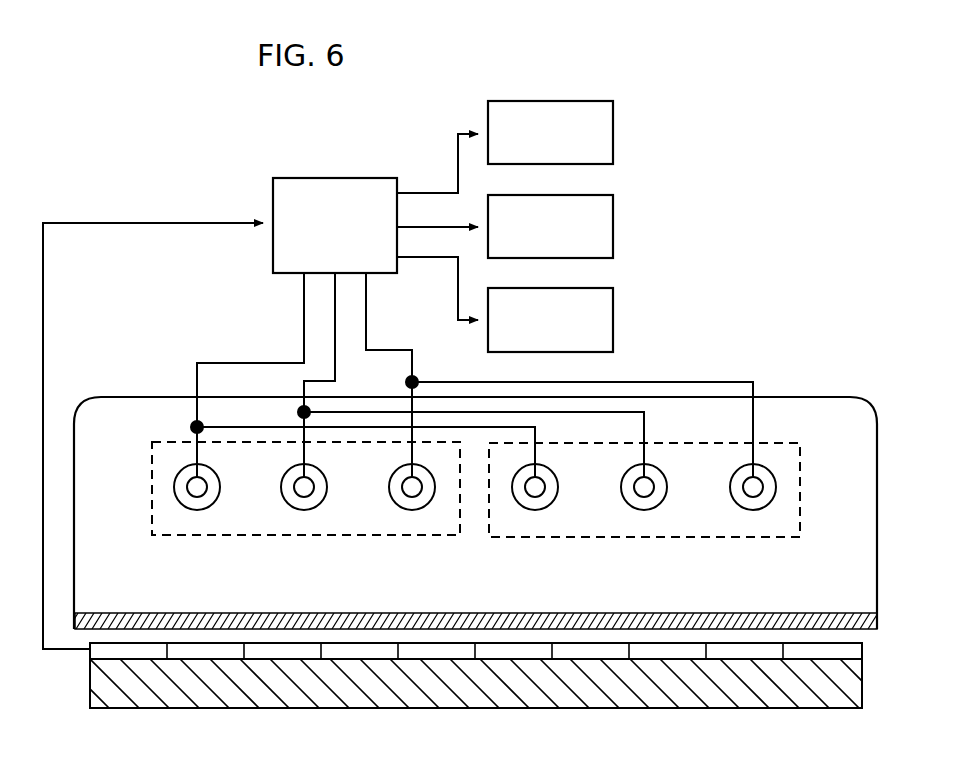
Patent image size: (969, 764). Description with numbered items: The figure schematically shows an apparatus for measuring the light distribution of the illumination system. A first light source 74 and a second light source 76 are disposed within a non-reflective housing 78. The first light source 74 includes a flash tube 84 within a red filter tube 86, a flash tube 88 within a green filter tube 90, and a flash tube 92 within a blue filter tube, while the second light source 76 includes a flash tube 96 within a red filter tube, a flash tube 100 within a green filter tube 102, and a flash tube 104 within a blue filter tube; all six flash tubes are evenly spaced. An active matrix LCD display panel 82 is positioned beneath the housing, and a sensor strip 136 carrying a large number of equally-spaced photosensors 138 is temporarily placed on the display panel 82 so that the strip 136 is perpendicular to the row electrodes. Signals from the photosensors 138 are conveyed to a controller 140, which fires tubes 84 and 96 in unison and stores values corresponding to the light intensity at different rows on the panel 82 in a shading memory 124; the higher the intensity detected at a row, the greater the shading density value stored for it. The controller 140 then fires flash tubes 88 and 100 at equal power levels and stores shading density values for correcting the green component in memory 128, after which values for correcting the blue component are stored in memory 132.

The controller 140 is at (353, 178).
The shading memory 124 is at (614, 128).
The memory 128 is at (614, 222).
The memory 132 is at (614, 318).
The non-reflective housing 78 is at (878, 467).
The first light source 74 is at (150, 502).
The second light source 76 is at (800, 497).
The red filter tube 86 is at (185, 470).
The flash tube 84 is at (203, 493).
The flash tube 88 is at (293, 478).
The green filter tube 90 is at (312, 494).
The flash tube 92 is at (401, 483).
The flash tube 96 is at (546, 487).
The green filter tube 102 is at (623, 497).
The flash tube 100 is at (651, 495).
The flash tube 104 is at (744, 482).
The sensor strip 136 is at (876, 651).
The photosensors 138 is at (278, 647).
The active matrix LCD display panel 82 is at (723, 709).